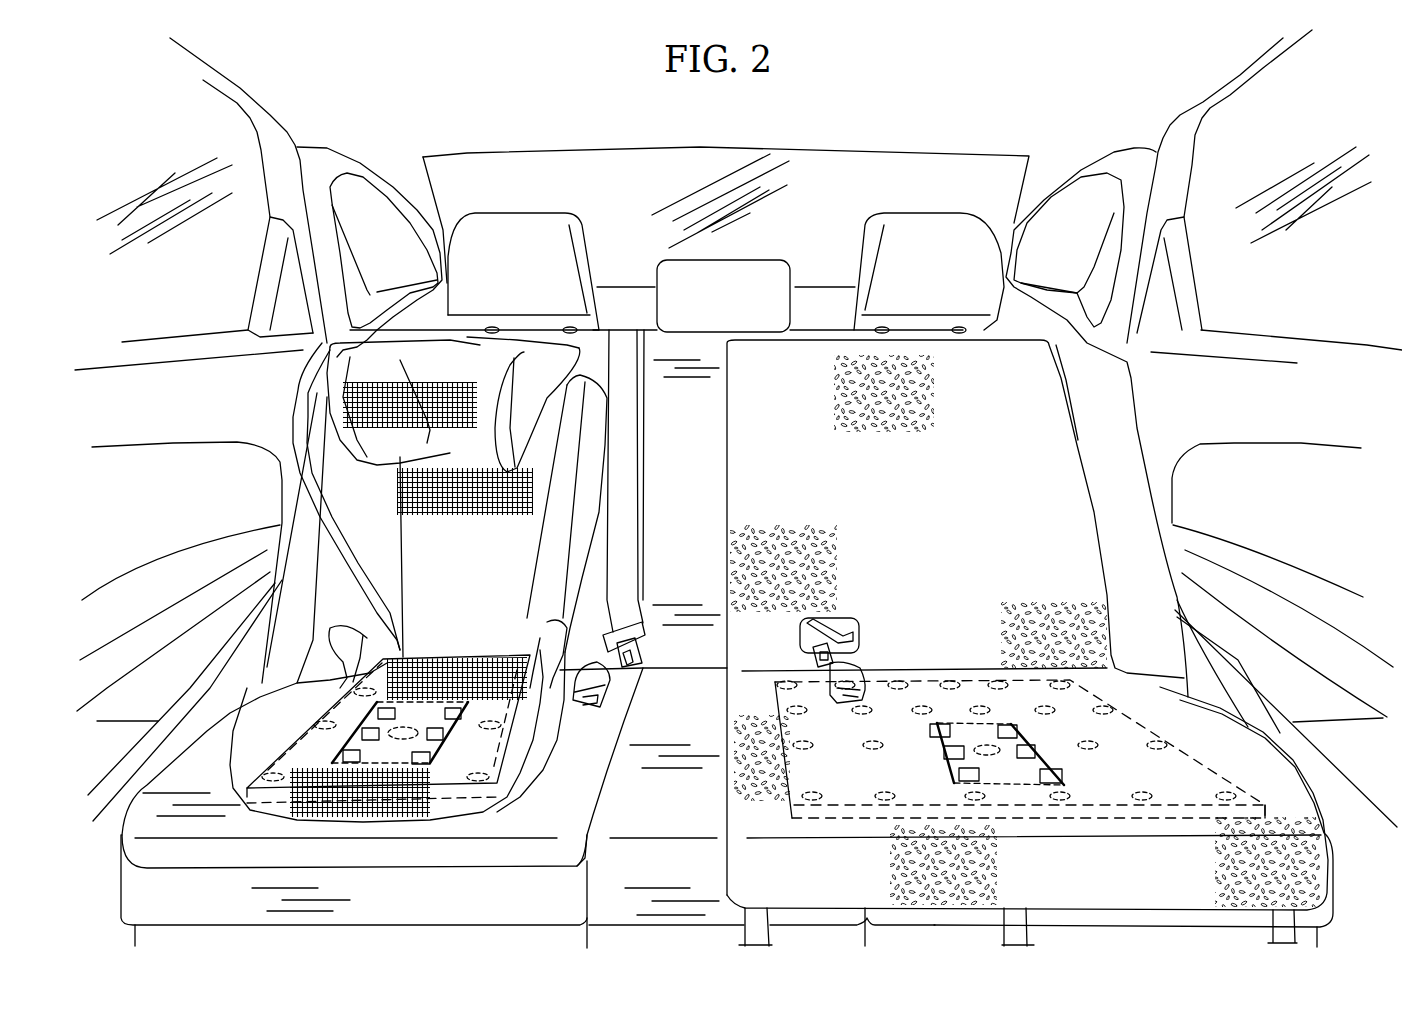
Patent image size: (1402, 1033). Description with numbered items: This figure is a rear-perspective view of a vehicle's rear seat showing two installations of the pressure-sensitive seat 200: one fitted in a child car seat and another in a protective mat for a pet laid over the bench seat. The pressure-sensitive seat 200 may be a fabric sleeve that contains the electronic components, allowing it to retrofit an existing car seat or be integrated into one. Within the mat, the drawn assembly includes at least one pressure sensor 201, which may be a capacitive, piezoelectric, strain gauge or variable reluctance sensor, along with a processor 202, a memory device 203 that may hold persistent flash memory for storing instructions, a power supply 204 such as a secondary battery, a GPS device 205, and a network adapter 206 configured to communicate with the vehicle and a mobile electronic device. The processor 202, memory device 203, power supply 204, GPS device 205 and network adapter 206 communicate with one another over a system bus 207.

The pressure-sensitive seat 200 is at (453, 640).
The pressure sensor 201 is at (1001, 748).
The processor 202 is at (944, 752).
The memory device 203 is at (960, 774).
The power supply 204 is at (998, 724).
The global positioning system (GPS) device 205 is at (1035, 752).
The network adapter 206 is at (1062, 779).
The system bus 207 is at (930, 728).